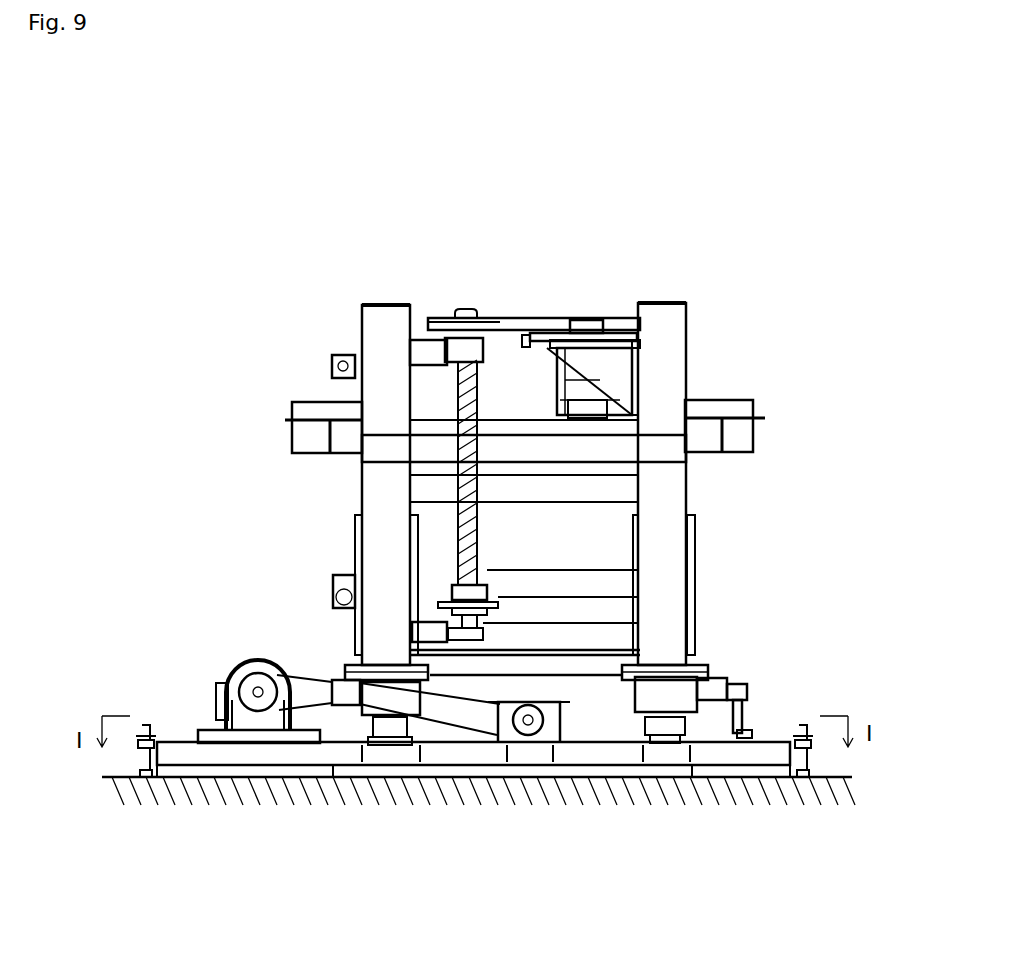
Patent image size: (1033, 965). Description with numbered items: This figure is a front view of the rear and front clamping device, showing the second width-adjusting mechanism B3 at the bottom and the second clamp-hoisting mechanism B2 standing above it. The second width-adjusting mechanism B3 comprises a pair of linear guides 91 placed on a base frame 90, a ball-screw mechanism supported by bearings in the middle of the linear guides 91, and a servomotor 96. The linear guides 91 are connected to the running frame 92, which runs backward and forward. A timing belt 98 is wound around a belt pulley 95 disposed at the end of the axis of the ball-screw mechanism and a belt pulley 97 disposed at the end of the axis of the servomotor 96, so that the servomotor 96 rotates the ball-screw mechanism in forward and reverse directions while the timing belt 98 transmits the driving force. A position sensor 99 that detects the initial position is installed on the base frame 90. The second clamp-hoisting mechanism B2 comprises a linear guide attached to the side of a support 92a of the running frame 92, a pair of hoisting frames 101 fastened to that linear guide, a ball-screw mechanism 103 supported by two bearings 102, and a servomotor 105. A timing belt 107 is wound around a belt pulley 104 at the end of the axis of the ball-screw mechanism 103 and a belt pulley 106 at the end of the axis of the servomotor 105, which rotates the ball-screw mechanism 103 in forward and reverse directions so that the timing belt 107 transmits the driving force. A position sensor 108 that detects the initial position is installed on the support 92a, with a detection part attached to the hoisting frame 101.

The base frame 90 is at (763, 741).
The linear guide 91 is at (350, 724).
The running frame 92 is at (700, 678).
The support 92a is at (383, 420).
The belt pulley 95 is at (528, 722).
The servomotor 96 is at (243, 660).
The belt pulley 97 is at (258, 695).
The timing belt 98 is at (322, 715).
The position sensor 99 is at (743, 687).
The hoisting frame 101 is at (553, 583).
The bearing 102 is at (433, 317).
The ball-screw mechanism 103 is at (445, 551).
The belt pulley 104 is at (463, 317).
The servomotor 105 is at (585, 390).
The belt pulley 106 is at (582, 313).
The timing belt 107 is at (517, 315).
The position sensor 108 is at (333, 592).
The second clamp-hoisting mechanism B2 is at (240, 272).
The second width-adjusting mechanism B3 is at (198, 683).